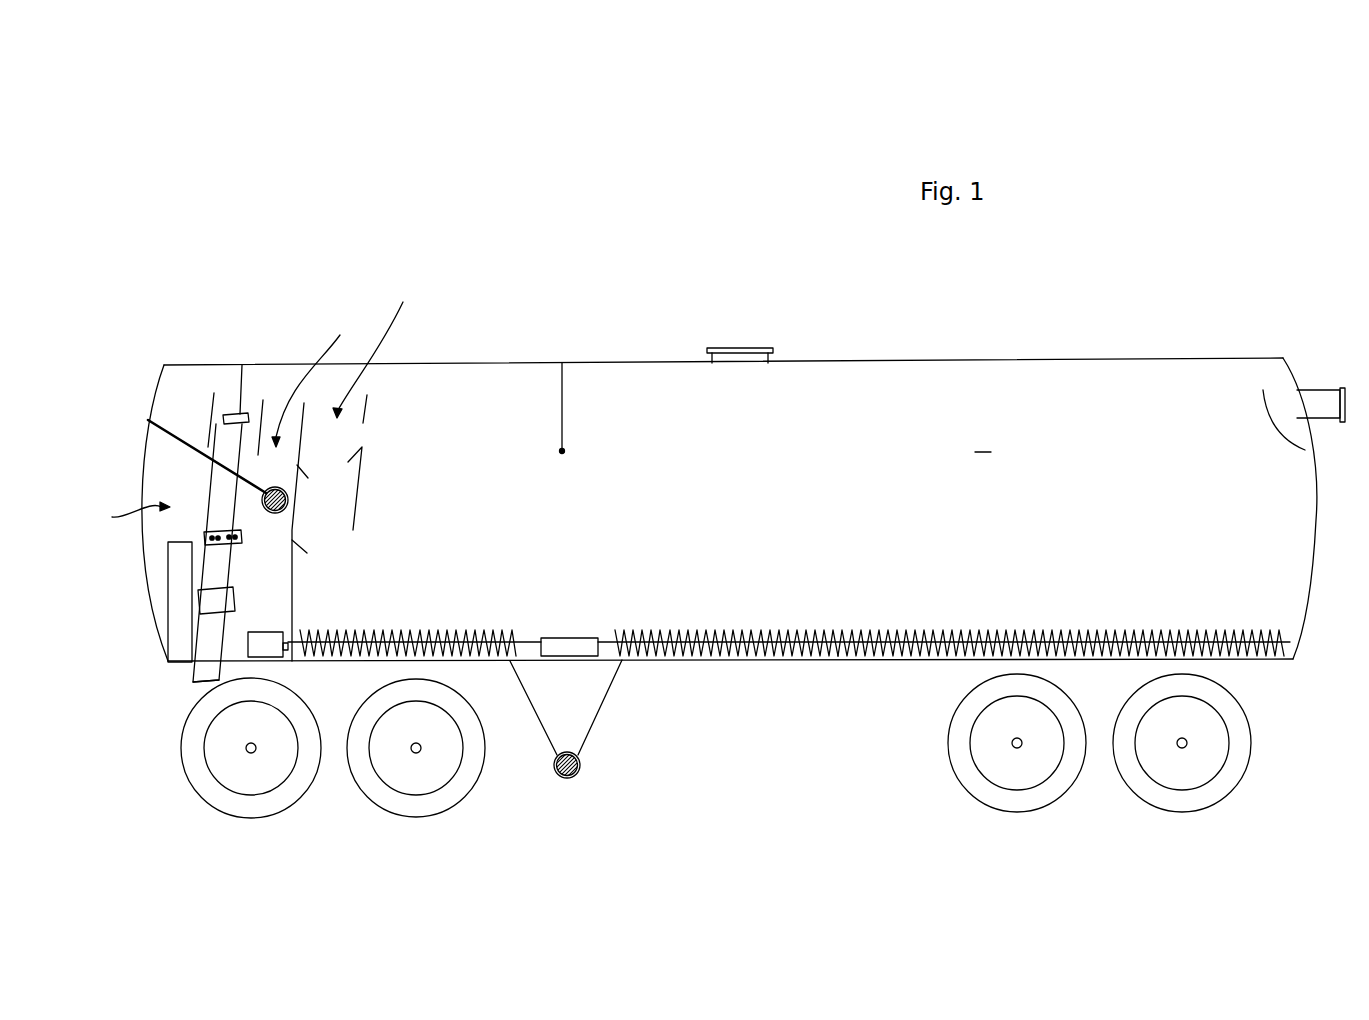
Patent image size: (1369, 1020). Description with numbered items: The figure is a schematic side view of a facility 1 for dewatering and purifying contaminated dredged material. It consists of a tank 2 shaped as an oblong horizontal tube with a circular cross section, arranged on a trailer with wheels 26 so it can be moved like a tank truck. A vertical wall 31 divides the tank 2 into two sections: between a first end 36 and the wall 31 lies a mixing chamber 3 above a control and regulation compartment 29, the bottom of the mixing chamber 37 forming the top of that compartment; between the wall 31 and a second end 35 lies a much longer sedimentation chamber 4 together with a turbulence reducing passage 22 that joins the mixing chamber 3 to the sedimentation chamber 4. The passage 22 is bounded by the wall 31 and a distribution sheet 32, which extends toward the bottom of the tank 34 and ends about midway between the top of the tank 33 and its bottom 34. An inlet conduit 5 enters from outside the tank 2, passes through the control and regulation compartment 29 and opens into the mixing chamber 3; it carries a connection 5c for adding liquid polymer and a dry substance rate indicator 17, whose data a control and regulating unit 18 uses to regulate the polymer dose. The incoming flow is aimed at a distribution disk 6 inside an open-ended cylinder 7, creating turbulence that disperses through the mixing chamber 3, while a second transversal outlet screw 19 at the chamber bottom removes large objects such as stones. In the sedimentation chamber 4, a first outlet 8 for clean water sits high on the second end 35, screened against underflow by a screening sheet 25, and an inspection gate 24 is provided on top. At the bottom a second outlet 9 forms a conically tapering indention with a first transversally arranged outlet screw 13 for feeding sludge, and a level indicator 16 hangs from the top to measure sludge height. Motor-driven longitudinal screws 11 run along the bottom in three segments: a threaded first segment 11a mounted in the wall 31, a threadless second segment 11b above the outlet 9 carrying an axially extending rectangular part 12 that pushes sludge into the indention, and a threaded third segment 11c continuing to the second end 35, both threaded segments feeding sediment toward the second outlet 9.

The facility 1 is at (447, 136).
The tank 2 is at (1104, 435).
The mixing chamber 3 is at (312, 381).
The sedimentation chamber 4 is at (983, 440).
The inlet conduit 5 is at (199, 673).
The connection 5c is at (220, 543).
The distribution disk 6 is at (227, 414).
The cylinder 7 is at (210, 410).
The first outlet 8 is at (1327, 404).
The second outlet 9 is at (579, 710).
The longitudinal screws 11 is at (714, 625).
The first segment 11a is at (442, 628).
The second segment 11b is at (586, 615).
The third segment 11c is at (843, 628).
The axially extending rectangular part 12 is at (566, 638).
The first transversally arranged outlet screw 13 is at (582, 778).
The level indicator 16 is at (563, 450).
The dry substance rate indicator 17 is at (203, 595).
The control and regulating unit 18 is at (177, 598).
The second transversal outlet screw 19 is at (264, 492).
The turbulence reducing passage 22 is at (378, 346).
The inspection gate 24 is at (742, 348).
The screening sheet 25 is at (1263, 390).
The wheels 26 is at (218, 763).
The control and regulation compartment 29 is at (130, 506).
The vertical wall 31 is at (293, 585).
The distribution sheet 32 is at (364, 455).
The top of the tank 33 is at (832, 360).
The bottom of the tank 34 is at (891, 665).
The second end 35 is at (1317, 538).
The first end 36 is at (157, 388).
The bottom of the mixing chamber 37 is at (166, 420).